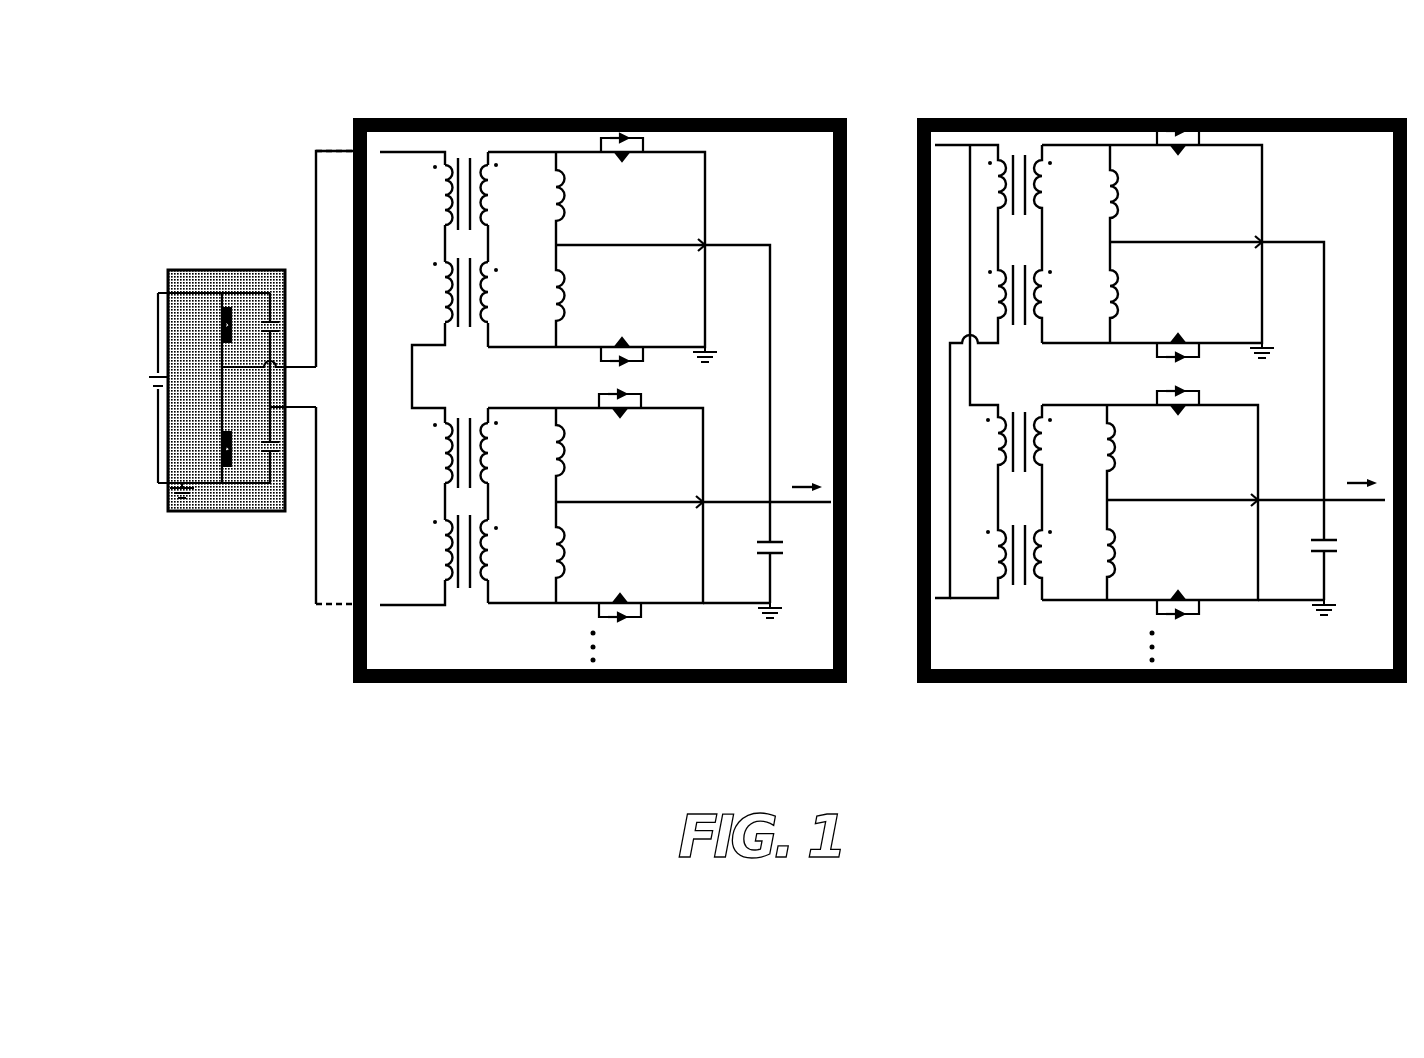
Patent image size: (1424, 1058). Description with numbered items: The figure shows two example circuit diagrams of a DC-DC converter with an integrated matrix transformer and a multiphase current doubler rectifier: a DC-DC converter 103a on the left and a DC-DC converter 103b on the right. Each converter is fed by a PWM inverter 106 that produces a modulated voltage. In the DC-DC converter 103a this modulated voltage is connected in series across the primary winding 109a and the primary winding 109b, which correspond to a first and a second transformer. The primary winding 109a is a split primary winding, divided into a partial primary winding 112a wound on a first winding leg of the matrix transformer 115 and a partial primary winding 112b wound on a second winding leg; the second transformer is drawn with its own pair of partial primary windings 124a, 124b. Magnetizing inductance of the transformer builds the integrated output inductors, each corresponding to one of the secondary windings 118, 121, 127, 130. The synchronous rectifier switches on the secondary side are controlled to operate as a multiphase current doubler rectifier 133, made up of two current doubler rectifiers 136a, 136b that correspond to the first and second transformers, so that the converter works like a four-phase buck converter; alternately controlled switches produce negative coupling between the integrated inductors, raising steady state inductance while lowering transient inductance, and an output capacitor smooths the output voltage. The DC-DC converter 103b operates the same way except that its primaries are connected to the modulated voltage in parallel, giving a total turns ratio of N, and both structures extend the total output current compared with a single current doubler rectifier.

The DC-DC converter 103a is at (347, 86).
The DC-DC converter 103b is at (910, 86).
The PWM inverter 106 is at (197, 155).
The primary winding 109a is at (326, 180).
The primary winding 109b is at (326, 543).
The partial primary winding 112a is at (432, 200).
The partial primary winding 112b is at (432, 284).
The matrix transformer 115 is at (463, 200).
The secondary winding 118 is at (496, 217).
The secondary winding 121 is at (499, 266).
The third primary winding 124a is at (432, 459).
The fourth primary winding 124b is at (432, 551).
The secondary winding 127 is at (496, 476).
The secondary winding 130 is at (500, 524).
The multiphase current doubler rectifier 133 is at (635, 104).
The current doubler rectifier 136a is at (648, 321).
The current doubler rectifier 136b is at (533, 382).